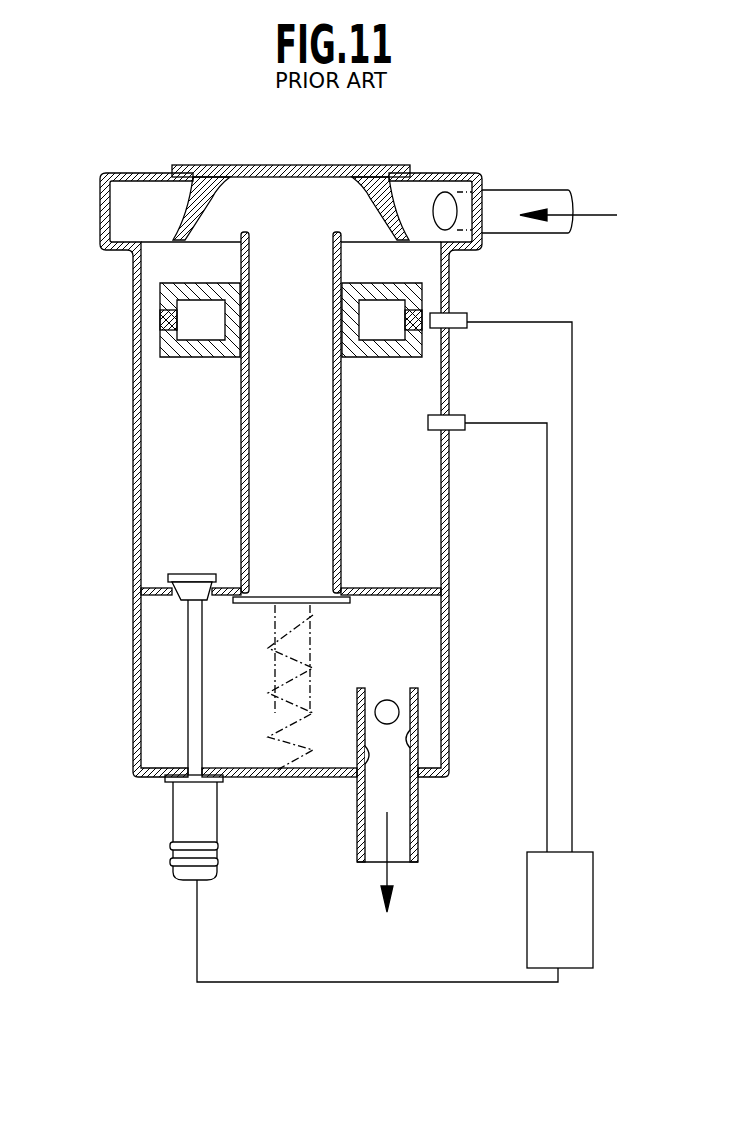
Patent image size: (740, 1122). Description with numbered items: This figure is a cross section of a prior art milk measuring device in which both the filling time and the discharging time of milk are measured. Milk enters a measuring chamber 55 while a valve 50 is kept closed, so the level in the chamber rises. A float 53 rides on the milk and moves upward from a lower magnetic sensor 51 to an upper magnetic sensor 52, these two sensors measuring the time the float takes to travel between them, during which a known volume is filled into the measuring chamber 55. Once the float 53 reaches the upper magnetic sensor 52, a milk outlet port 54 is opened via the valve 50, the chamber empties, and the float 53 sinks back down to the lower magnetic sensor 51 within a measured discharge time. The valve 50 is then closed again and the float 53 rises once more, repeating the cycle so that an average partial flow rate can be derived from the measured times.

The valve 50 is at (180, 810).
The lower magnetic sensor 51 is at (457, 418).
The upper magnetic sensor 52 is at (457, 318).
The float 53 is at (176, 322).
The milk outlet port 54 is at (177, 598).
The measuring chamber 55 is at (152, 493).